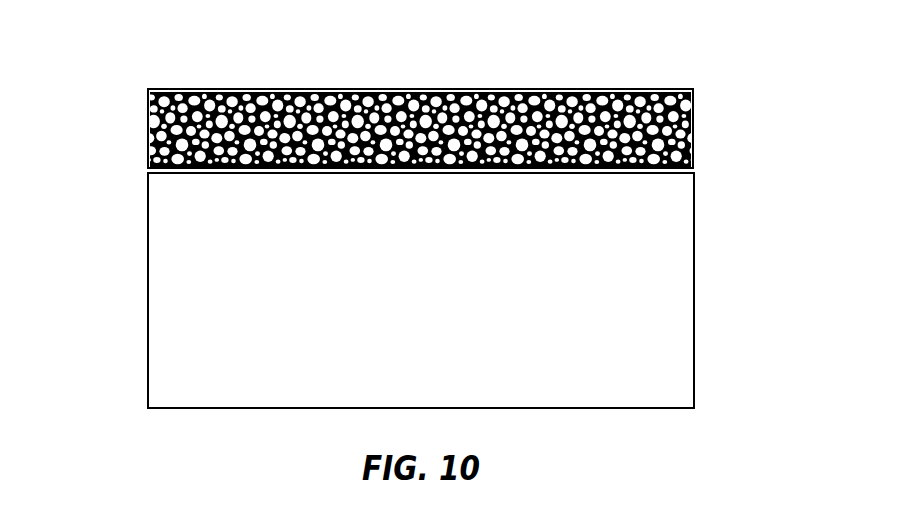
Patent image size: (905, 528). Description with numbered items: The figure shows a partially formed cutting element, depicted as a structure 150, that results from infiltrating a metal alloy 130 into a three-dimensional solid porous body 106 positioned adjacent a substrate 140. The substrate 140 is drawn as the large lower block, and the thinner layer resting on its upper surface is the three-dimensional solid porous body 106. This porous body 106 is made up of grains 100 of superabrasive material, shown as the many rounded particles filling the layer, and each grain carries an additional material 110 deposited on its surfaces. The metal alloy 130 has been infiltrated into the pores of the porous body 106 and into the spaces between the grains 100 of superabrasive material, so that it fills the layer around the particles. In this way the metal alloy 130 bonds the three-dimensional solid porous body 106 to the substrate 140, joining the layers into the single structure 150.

The structure 150 is at (117, 90).
The substrate 140 is at (672, 284).
The additional material 110 is at (503, 91).
The grains of superabrasive material 100 is at (403, 93).
The metal alloy 130 is at (263, 91).
The three-dimensional solid porous body 106 is at (222, 86).